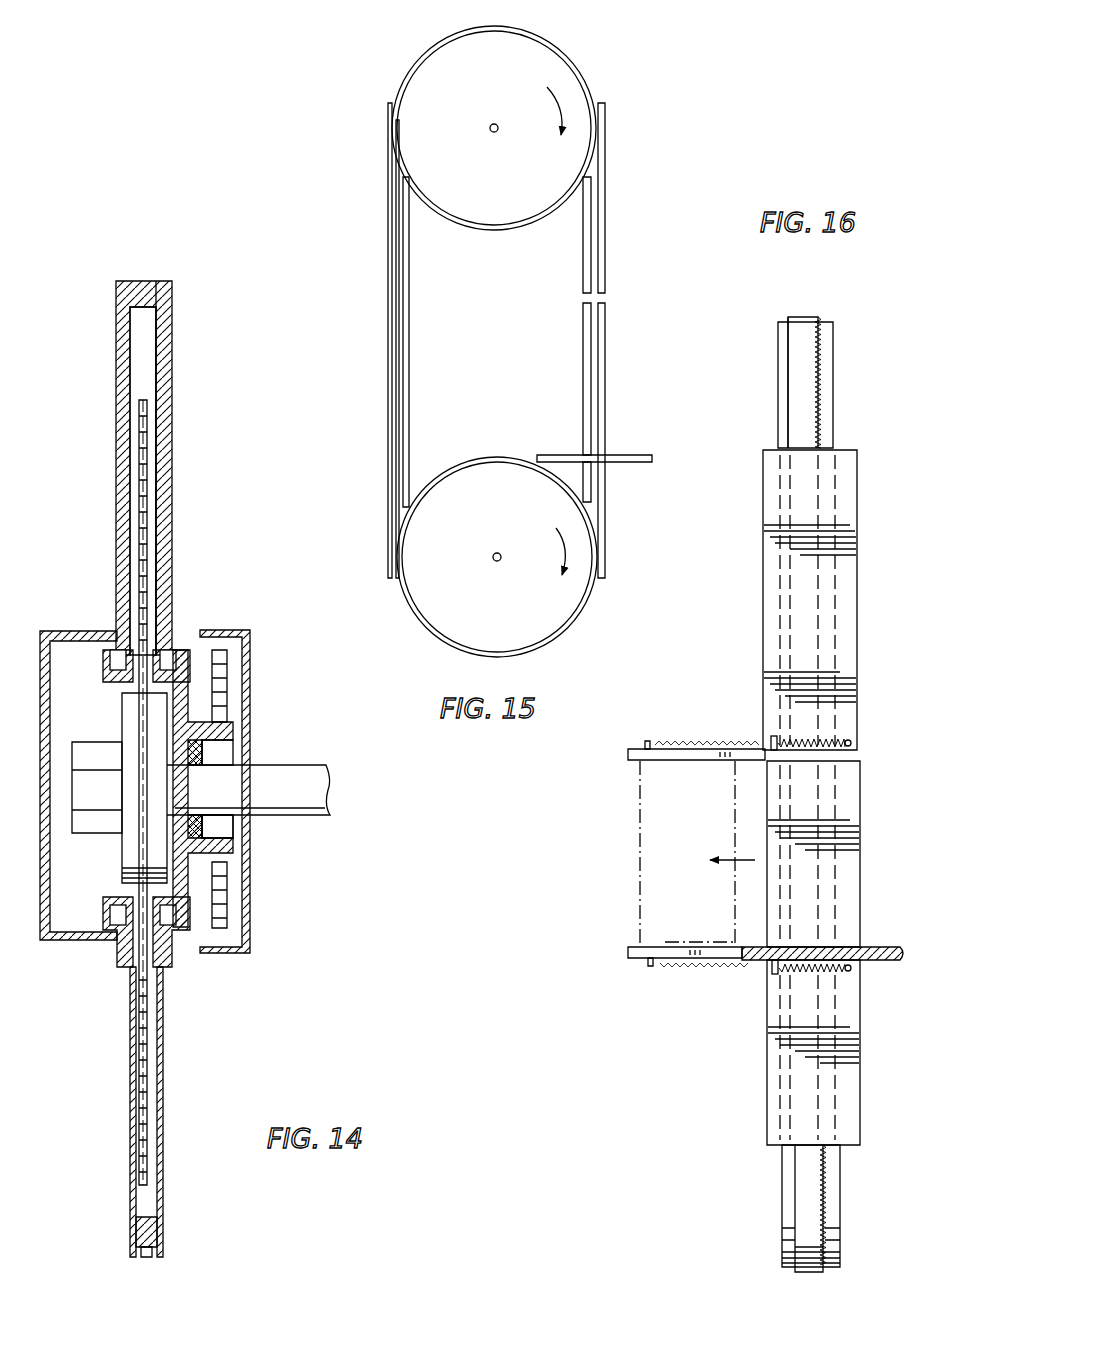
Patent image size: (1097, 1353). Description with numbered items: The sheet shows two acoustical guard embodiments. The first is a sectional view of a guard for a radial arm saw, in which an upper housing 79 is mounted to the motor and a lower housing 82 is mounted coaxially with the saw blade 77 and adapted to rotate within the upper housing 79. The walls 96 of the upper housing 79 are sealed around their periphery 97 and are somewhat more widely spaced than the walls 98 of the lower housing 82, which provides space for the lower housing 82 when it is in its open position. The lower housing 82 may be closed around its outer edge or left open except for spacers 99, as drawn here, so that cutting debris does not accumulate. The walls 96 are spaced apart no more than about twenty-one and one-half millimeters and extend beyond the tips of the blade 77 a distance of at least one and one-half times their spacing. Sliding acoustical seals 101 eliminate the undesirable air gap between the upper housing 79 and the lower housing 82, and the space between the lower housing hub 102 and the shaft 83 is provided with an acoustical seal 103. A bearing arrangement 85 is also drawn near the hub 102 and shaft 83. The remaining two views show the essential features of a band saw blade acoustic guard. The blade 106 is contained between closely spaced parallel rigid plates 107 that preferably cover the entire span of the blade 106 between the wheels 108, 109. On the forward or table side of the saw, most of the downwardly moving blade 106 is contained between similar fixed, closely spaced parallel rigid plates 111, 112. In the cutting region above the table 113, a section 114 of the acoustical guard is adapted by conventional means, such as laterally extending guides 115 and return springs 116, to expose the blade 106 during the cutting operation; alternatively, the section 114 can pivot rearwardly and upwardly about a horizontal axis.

In FIG. 14, the saw blade 77 is at (150, 1047).
In FIG. 14, the upper housing 79 is at (179, 483).
In FIG. 14, the lower housing 82 is at (128, 1078).
In FIG. 14, the shaft 83 is at (297, 775).
In FIG. 14, the bearing 85 is at (221, 679).
In FIG. 14, the walls 96 is at (160, 393).
In FIG. 14, the periphery 97 is at (155, 283).
In FIG. 14, the walls 98 is at (155, 1222).
In FIG. 14, the spacers 99 is at (148, 1258).
In FIG. 14, the sliding acoustical seals 101 is at (100, 920).
In FIG. 14, the lower housing hub 102 is at (190, 713).
In FIG. 14, the acoustical seal 103 is at (216, 838).
In FIG. 15, the blade 106 is at (390, 349).
In FIG. 16, the blade 106 is at (795, 391).
In FIG. 15, the parallel rigid plates 107 is at (402, 413).
In FIG. 15, the wheel 108 is at (488, 613).
In FIG. 16, the wheel 108 is at (782, 1231).
In FIG. 15, the wheel 109 is at (488, 193).
In FIG. 16, the wheel 109 is at (778, 353).
In FIG. 15, the fixed parallel rigid plate 111 is at (583, 251).
In FIG. 16, the fixed parallel rigid plate 111 is at (763, 643).
In FIG. 15, the fixed parallel rigid plate 112 is at (604, 521).
In FIG. 16, the fixed parallel rigid plate 112 is at (765, 1098).
In FIG. 15, the table 113 is at (634, 455).
In FIG. 16, the table 113 is at (755, 960).
In FIG. 15, the section 114 is at (584, 375).
In FIG. 16, the section 114 is at (640, 887).
In FIG. 16, the laterally extending guides 115 is at (628, 760).
In FIG. 16, the return springs 116 is at (829, 742).